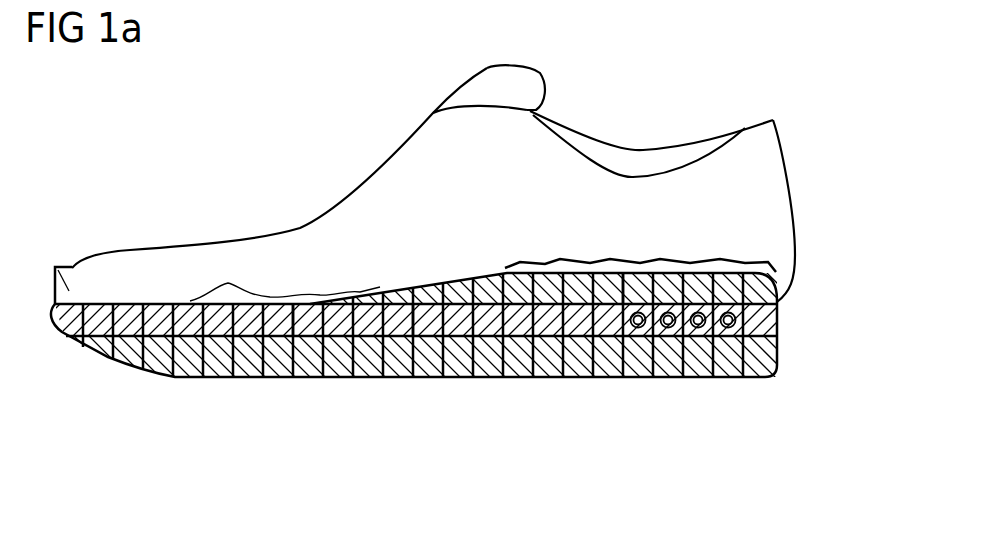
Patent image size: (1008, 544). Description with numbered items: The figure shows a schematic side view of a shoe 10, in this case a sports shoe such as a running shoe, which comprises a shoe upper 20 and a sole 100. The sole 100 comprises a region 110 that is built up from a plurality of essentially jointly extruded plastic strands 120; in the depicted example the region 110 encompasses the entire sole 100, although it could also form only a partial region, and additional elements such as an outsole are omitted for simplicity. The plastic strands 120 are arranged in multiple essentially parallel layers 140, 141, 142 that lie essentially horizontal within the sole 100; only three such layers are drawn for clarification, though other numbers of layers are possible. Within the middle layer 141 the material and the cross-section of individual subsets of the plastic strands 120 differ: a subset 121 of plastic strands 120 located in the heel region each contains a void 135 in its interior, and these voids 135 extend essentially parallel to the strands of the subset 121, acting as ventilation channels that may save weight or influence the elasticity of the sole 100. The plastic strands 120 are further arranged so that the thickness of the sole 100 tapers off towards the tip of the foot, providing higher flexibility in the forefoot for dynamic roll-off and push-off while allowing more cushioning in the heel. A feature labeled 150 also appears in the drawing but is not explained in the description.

The shoe 10 is at (334, 114).
The shoe upper 20 is at (547, 173).
The sole 100 is at (475, 300).
The region 110 is at (787, 419).
The plastic strands 120 is at (287, 350).
The subset of plastic strands 121 is at (700, 365).
The void 135 is at (701, 266).
The layer 140 is at (797, 286).
The middle layer 141 is at (790, 319).
The layer 142 is at (784, 355).
The toe cap 150 is at (105, 351).